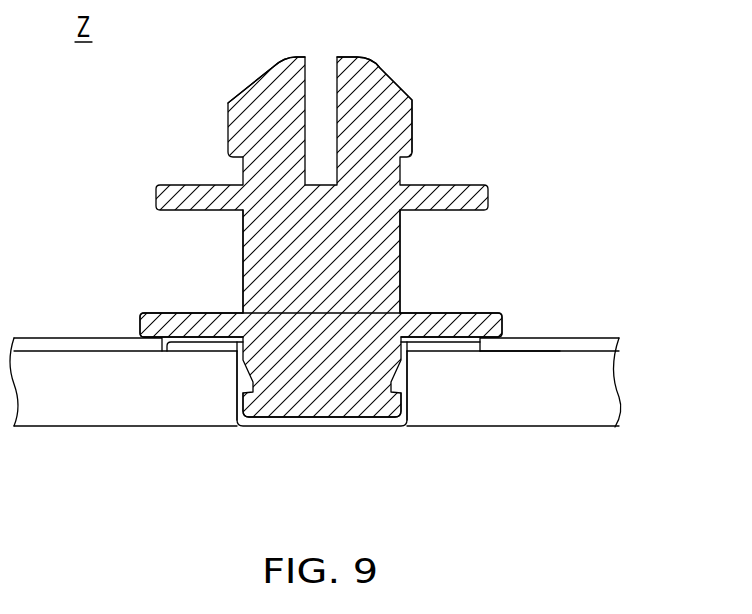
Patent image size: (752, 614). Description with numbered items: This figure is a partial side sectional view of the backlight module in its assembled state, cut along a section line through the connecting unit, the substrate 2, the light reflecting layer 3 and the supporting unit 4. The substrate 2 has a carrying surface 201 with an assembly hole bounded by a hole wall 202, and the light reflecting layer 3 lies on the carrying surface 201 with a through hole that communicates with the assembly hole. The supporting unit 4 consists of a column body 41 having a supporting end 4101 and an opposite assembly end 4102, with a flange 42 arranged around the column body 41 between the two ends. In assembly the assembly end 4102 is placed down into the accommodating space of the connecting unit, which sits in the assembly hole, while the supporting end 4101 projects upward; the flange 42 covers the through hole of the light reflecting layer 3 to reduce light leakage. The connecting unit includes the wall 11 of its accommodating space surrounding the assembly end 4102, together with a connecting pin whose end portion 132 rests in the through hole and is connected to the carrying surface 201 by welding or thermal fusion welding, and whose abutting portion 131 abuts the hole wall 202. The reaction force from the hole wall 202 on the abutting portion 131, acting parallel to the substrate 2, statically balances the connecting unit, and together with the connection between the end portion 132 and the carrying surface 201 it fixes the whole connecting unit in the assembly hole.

The supporting unit 4 is at (203, 78).
The supporting end 4101 is at (413, 115).
The column body 41 is at (401, 256).
The flange 42 is at (504, 326).
The assembly end 4102 is at (352, 411).
The light reflecting layer 3 is at (587, 348).
The substrate 2 is at (315, 412).
The receiving groove wall 11 is at (302, 425).
The abutting portion 131 is at (233, 388).
The end portion 132 is at (183, 347).
The carrying surface 201 is at (513, 352).
The hole wall 202 is at (410, 403).